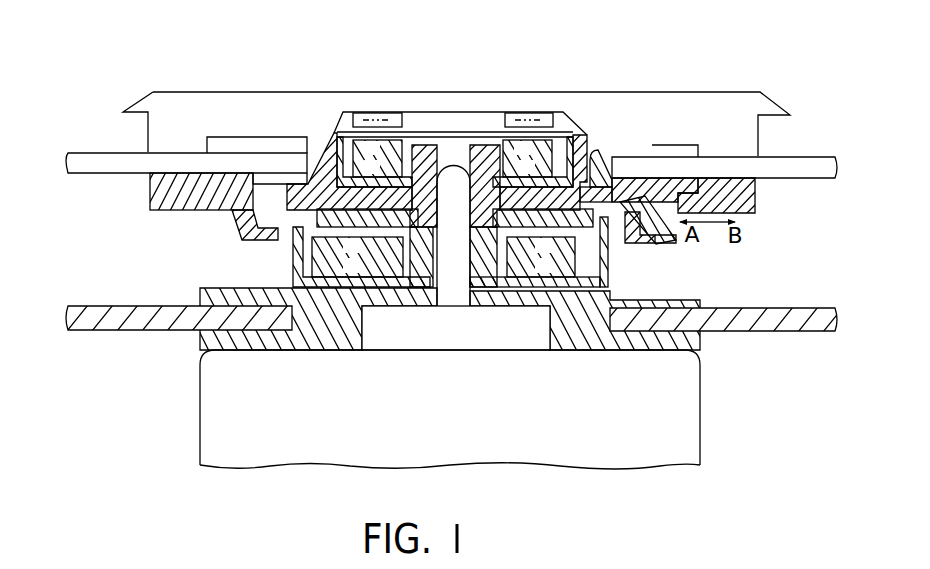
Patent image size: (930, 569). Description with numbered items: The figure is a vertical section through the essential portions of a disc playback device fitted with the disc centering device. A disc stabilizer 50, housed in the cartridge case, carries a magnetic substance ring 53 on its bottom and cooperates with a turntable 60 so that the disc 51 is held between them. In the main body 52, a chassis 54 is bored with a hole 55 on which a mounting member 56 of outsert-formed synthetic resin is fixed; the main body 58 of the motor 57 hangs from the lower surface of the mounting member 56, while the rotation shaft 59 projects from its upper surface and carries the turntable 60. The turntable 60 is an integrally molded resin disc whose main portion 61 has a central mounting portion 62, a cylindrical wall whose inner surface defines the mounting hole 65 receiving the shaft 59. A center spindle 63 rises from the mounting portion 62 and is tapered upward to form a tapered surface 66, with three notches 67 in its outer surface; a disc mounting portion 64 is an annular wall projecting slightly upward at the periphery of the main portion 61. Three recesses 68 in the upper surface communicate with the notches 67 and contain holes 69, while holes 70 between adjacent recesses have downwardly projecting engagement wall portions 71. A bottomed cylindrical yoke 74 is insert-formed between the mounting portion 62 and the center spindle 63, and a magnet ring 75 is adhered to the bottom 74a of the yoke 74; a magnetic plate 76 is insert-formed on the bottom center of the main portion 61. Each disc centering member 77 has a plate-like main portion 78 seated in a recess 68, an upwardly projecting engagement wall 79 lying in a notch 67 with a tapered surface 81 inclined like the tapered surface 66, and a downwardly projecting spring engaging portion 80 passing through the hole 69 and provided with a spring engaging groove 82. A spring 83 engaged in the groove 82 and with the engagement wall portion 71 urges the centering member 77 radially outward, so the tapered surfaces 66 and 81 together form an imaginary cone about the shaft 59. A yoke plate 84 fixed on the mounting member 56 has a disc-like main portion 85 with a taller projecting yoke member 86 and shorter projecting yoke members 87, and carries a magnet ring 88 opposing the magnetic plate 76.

The disc stabilizer 50 is at (220, 91).
The disc 51 is at (797, 157).
The main body 52 is at (453, 332).
The magnetic substance ring 53 is at (355, 113).
The chassis 54 is at (783, 332).
The hole 55 is at (607, 330).
The mounting member 56 is at (576, 340).
The motor 57 is at (700, 391).
The main body of the motor 58 is at (700, 443).
The rotation shaft 59 is at (453, 183).
The turntable 60 is at (146, 190).
The main portion 61 is at (242, 180).
The mounting portion 62 is at (483, 157).
The center spindle 63 is at (327, 153).
The disc mounting portion 64 is at (167, 170).
The mounting hole 65 is at (415, 200).
The tapered surface 66 is at (578, 150).
The notch 67 is at (600, 165).
The recess 68 is at (702, 188).
The hole 69 is at (663, 233).
The hole 70 is at (288, 197).
The engagement wall portion 71 is at (258, 242).
The yoke 74 is at (345, 132).
The bottom of the yoke 74a is at (452, 195).
The magnet ring 75 is at (547, 150).
The magnetic plate 76 is at (333, 220).
The disc centering member 77 is at (667, 187).
The main portion 78 is at (640, 190).
The engagement wall 79 is at (630, 195).
The spring engaging portion 80 is at (658, 245).
The tapered surface 81 is at (605, 180).
The spring engaging groove 82 is at (627, 223).
The spring 83 is at (465, 254).
The yoke plate 84 is at (385, 310).
The main portion 85 is at (350, 300).
The projecting yoke member 86 is at (545, 310).
The projecting yoke member 87 is at (267, 300).
The magnet ring 88 is at (512, 310).